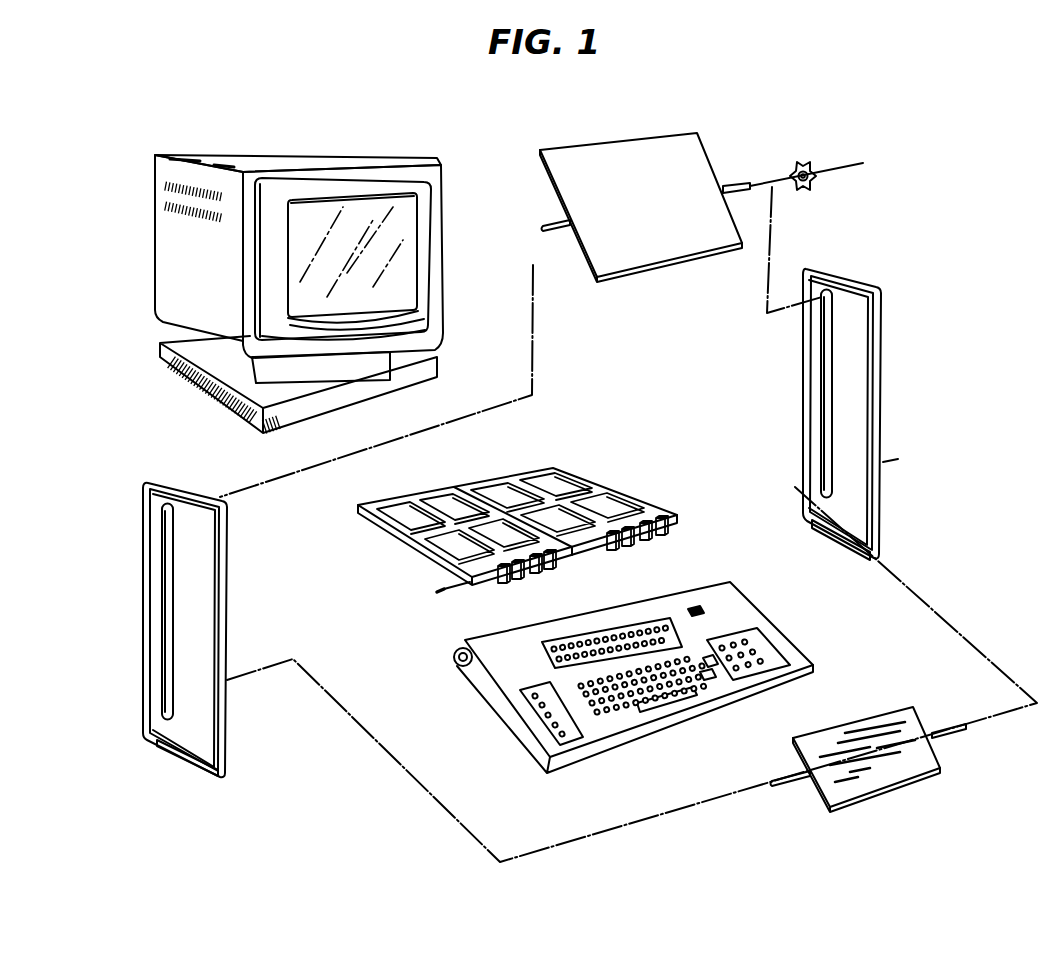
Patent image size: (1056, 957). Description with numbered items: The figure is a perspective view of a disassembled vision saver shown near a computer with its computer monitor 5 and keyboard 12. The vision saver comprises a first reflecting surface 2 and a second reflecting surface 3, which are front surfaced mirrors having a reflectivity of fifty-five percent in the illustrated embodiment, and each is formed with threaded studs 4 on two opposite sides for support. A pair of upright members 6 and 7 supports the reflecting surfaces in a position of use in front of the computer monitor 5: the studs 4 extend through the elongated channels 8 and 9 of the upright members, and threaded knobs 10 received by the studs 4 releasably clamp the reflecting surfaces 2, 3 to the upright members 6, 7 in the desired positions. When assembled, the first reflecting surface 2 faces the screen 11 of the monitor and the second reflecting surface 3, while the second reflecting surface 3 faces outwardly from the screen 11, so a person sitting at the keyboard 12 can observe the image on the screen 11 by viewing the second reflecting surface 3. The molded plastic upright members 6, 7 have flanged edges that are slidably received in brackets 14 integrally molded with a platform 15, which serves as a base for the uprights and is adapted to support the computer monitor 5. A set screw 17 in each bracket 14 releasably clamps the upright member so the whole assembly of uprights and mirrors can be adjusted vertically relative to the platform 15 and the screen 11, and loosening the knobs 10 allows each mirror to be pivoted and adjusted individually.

The first reflecting surface 2 is at (673, 233).
The second reflecting surface 3 is at (895, 732).
The threaded studs 4 is at (551, 236).
The computer monitor 5 is at (258, 156).
The upright member 6 is at (170, 513).
The upright member 7 is at (859, 273).
The elongated channel 8 is at (177, 573).
The elongated channel 9 is at (832, 395).
The threaded knobs 10 is at (820, 178).
The screen 11 is at (374, 272).
The keyboard 12 is at (737, 613).
The brackets 14 is at (657, 540).
The platform 15 is at (507, 475).
The set screw 17 is at (438, 592).